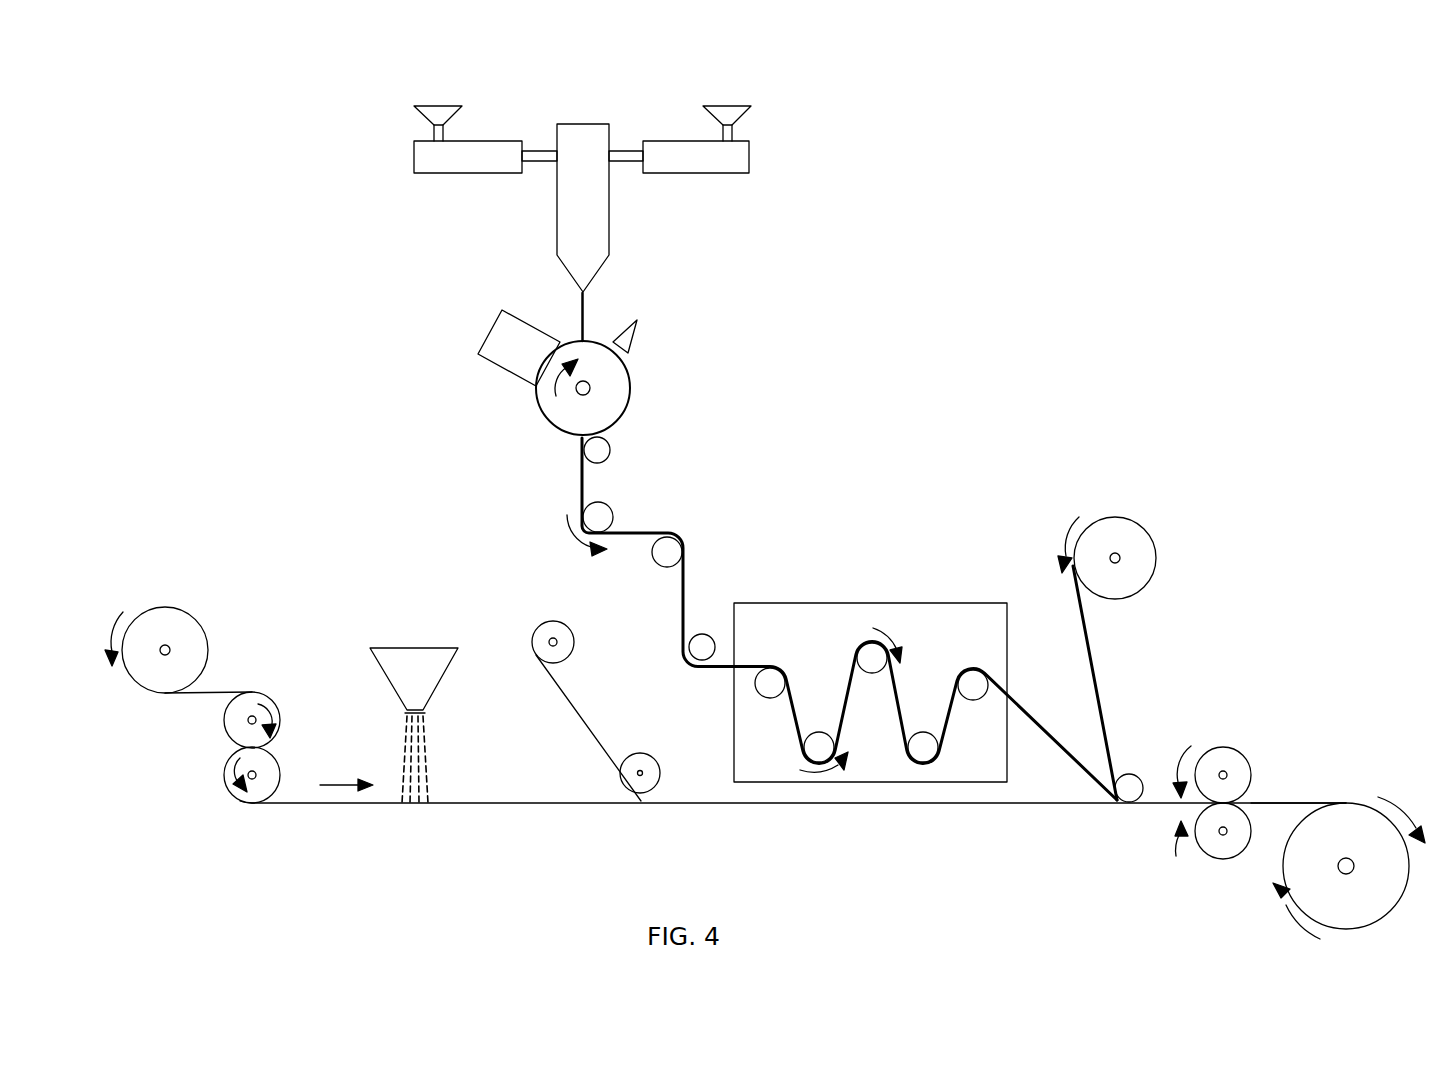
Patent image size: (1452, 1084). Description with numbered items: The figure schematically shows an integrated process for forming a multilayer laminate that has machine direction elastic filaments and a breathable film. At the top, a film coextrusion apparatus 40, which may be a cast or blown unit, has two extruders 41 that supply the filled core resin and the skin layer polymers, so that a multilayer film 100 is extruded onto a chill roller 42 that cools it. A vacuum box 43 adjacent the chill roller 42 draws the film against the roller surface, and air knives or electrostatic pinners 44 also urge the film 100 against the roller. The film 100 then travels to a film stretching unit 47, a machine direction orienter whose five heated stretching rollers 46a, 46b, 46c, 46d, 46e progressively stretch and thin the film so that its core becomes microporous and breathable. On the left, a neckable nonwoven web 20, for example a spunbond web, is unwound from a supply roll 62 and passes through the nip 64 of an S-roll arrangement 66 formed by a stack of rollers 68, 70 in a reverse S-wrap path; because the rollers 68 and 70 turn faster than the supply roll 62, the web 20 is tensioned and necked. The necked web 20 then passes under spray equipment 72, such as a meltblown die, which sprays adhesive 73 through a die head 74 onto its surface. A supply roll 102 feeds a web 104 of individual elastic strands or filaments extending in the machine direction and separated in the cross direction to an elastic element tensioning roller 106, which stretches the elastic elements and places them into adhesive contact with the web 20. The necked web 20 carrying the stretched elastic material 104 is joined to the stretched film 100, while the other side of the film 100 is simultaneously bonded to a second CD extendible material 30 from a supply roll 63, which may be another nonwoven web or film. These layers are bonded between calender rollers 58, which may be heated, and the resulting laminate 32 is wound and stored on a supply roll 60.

The first nonwoven web 20 is at (217, 690).
The second CD extendible material 30 is at (1093, 680).
The laminate 32 is at (1277, 801).
The film coextrusion apparatus 40 is at (594, 217).
The extruder 41 is at (438, 160).
The chill roller 42 is at (617, 400).
The vacuum box 43 is at (495, 347).
The air knives or electrostatic pinners 44 is at (630, 342).
The stretching roller 46a is at (778, 668).
The stretching roller 46b is at (825, 740).
The stretching roller 46c is at (873, 668).
The stretching roller 46d is at (925, 740).
The stretching roller 46e is at (975, 673).
The film stretching unit 47 is at (852, 602).
The calender rollers 58 is at (1218, 758).
The supply roll 60 is at (1390, 860).
The supply roll 62 is at (160, 617).
The supply roll 63 is at (1138, 552).
The nip 64 is at (300, 735).
The S-roll arrangement 66 is at (270, 675).
The roller 68 is at (232, 720).
The roller 70 is at (227, 775).
The spray equipment 72 is at (413, 650).
The adhesive 73 is at (427, 772).
The die head 74 is at (418, 714).
The multilayer film 100 is at (638, 531).
The supply roll 102 is at (545, 624).
The web of elastic elements 104 is at (580, 724).
The elastic element tensioning roller 106 is at (653, 773).